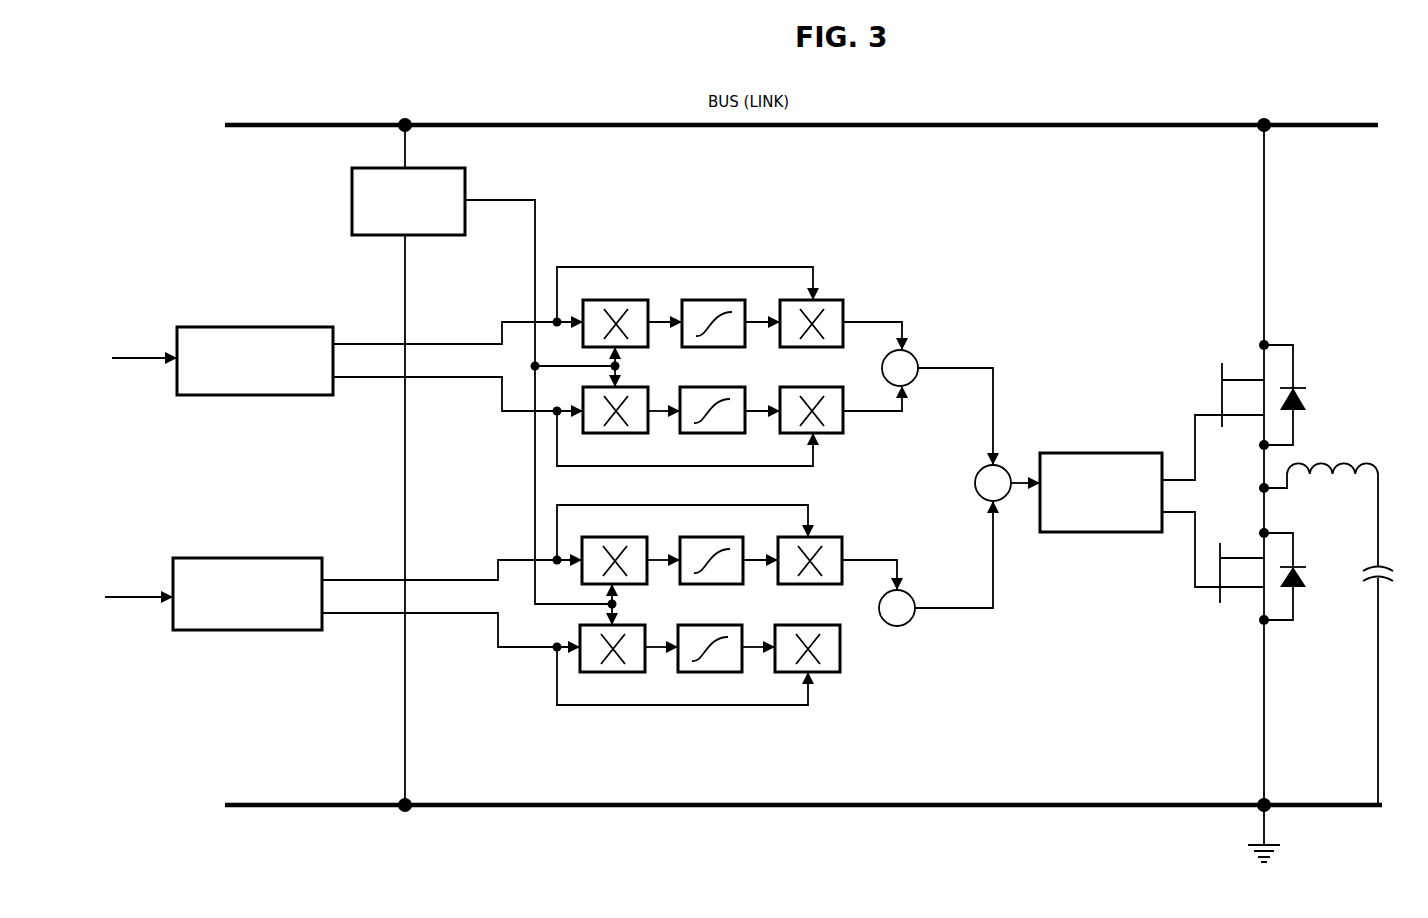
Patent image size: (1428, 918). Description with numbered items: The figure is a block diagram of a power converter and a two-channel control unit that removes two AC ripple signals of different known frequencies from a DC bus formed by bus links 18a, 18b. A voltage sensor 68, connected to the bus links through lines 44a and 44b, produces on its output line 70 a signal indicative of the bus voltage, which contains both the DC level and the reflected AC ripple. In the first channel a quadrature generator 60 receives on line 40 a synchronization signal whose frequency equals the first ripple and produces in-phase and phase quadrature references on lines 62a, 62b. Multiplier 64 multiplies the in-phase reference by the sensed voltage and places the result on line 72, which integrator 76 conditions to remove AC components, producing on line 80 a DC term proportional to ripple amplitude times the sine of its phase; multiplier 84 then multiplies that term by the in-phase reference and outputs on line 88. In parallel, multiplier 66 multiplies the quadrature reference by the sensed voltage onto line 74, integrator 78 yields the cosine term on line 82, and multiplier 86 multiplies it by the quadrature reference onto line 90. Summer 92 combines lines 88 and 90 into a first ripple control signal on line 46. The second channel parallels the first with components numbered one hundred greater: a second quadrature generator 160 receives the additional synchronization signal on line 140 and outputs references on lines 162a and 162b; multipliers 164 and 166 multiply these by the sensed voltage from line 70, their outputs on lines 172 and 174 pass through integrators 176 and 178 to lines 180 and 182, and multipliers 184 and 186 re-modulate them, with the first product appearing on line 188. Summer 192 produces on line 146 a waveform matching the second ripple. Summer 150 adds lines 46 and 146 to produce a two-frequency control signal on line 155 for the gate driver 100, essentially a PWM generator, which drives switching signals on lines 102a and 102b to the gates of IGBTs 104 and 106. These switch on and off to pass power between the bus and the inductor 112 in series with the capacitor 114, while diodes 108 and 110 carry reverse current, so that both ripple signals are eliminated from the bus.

The bus link 18a is at (425, 125).
The bus link 18b is at (417, 805).
The line 44a is at (408, 150).
The line 44b is at (407, 725).
The voltage sensor 68 is at (352, 180).
The output line 70 is at (510, 200).
The quadrature generator 60 is at (244, 327).
The line 40 is at (143, 360).
The line 62a is at (358, 344).
The line 62b is at (360, 377).
The multiplier 64 is at (608, 300).
The multiplier 66 is at (612, 433).
The line 72 is at (658, 322).
The line 74 is at (662, 411).
The integrator 76 is at (709, 300).
The integrator 78 is at (722, 433).
The line 80 is at (757, 322).
The line 82 is at (758, 411).
The multiplier 84 is at (826, 300).
The multiplier 86 is at (822, 433).
The line 88 is at (886, 322).
The line 90 is at (878, 411).
The summer 92 is at (912, 355).
The line 46 is at (985, 368).
The second quadrature generator 160 is at (237, 558).
The line 140 is at (138, 597).
The line 162a is at (346, 580).
The line 162b is at (356, 613).
The multiplier 164 is at (600, 537).
The multiplier 166 is at (605, 672).
The line 172 is at (664, 560).
The line 174 is at (654, 647).
The integrator 176 is at (717, 530).
The integrator 178 is at (712, 672).
The line 180 is at (762, 560).
The line 182 is at (756, 647).
The multiplier 184 is at (834, 537).
The multiplier 186 is at (842, 672).
The line 188 is at (886, 560).
The summer 192 is at (912, 620).
The line 146 is at (944, 608).
The summer 150 is at (975, 483).
The line 155 is at (1013, 478).
The gate driver 100 is at (1092, 453).
The line 102a is at (1175, 480).
The line 102b is at (1177, 515).
The IGBT 104 is at (1215, 390).
The IGBT 106 is at (1212, 575).
The diode 108 is at (1305, 400).
The diode 110 is at (1303, 578).
The inductor 112 is at (1340, 465).
The capacitor 114 is at (1362, 575).